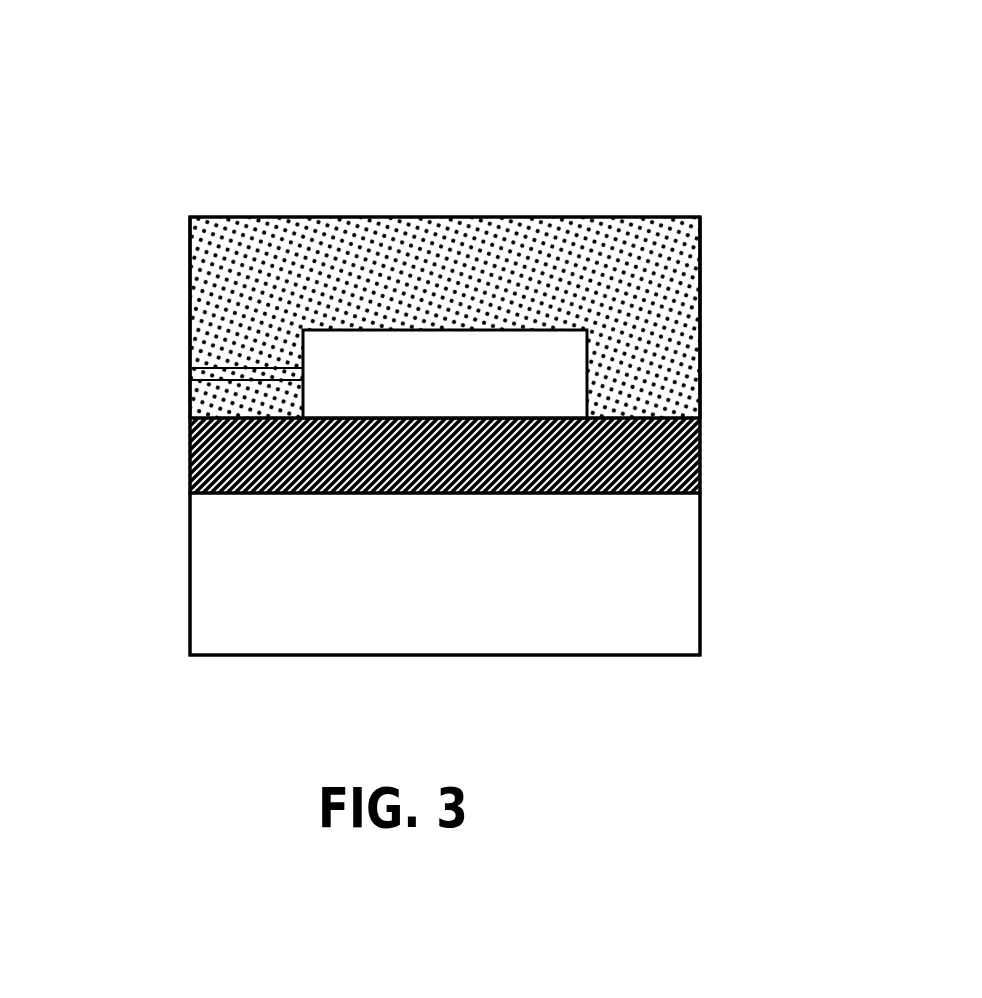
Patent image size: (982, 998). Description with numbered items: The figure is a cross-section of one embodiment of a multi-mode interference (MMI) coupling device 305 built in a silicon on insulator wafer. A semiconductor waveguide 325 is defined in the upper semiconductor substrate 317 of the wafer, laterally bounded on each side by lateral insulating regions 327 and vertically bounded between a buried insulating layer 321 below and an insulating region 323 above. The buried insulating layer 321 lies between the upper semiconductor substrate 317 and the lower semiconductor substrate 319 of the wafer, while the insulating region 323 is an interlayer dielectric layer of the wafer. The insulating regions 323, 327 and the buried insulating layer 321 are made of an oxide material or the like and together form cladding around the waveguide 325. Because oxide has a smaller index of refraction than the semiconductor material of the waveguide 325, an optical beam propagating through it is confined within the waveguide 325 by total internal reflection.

The MMI coupling device 305 is at (818, 55).
The semiconductor substrate 317 is at (192, 362).
The semiconductor substrate 319 is at (190, 590).
The buried insulating layer 321 is at (190, 449).
The insulating region 323 is at (190, 262).
The semiconductor waveguide 325 is at (192, 374).
The lateral insulating regions 327 is at (190, 330).